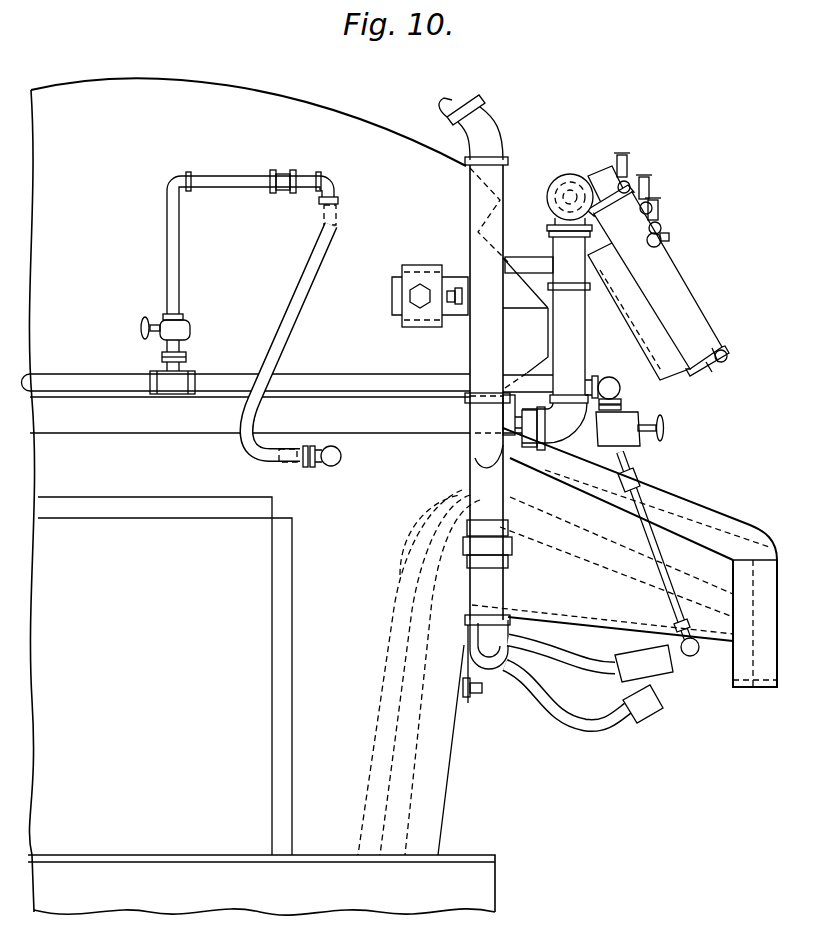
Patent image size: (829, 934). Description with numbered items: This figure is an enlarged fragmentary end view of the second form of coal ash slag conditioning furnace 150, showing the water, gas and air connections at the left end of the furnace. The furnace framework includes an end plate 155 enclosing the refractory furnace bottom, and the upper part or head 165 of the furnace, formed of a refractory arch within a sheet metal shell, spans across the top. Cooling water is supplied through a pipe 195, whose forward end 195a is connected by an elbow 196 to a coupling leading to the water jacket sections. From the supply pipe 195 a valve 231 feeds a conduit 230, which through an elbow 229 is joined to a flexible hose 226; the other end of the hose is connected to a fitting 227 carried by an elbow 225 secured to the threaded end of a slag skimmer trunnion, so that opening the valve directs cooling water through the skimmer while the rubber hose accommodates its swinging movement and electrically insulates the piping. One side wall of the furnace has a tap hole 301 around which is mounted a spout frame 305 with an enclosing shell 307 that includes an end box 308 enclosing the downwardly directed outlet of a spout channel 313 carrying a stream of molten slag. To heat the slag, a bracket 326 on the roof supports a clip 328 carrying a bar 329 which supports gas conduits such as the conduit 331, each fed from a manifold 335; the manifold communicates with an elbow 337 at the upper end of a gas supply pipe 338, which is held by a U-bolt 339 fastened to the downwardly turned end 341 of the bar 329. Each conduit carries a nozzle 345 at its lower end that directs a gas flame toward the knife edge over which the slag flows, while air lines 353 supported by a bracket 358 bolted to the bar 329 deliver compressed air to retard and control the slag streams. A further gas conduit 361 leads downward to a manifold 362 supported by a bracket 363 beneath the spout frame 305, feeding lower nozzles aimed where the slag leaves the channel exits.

The coal ash slag conditioning furnace 150 is at (191, 73).
The end plate 155 is at (478, 886).
The furnace head 165 is at (314, 101).
The water supply pipe 195 is at (55, 378).
The forward end of supply pipe 195a is at (510, 386).
The elbow 196 is at (611, 378).
The elbow 225 is at (334, 468).
The flexible hose 226 is at (298, 333).
The fitting 227 is at (290, 448).
The elbow 229 is at (338, 185).
The conduit 230 is at (165, 240).
The valve 231 is at (162, 322).
The tap hole 301 is at (426, 515).
The spout frame 305 is at (702, 496).
The enclosing shell 307 is at (672, 540).
The end box 308 is at (763, 607).
The spout channel 313 is at (580, 553).
The bracket 326 is at (520, 262).
The clip 328 is at (616, 318).
The supporting bar 329 is at (665, 258).
The gas conduit 331 is at (648, 340).
The manifold 335 is at (562, 180).
The elbow 337 is at (585, 176).
The gas supply pipe 338 is at (562, 323).
The U-bolt 339 is at (580, 308).
The downwardly turned end 341 is at (630, 234).
The nozzle 345 is at (640, 385).
The air line 353 is at (628, 164).
The bracket 358 is at (661, 236).
The gas conduit 361 is at (471, 109).
The gas manifold 362 is at (506, 652).
The bracket 363 is at (492, 672).